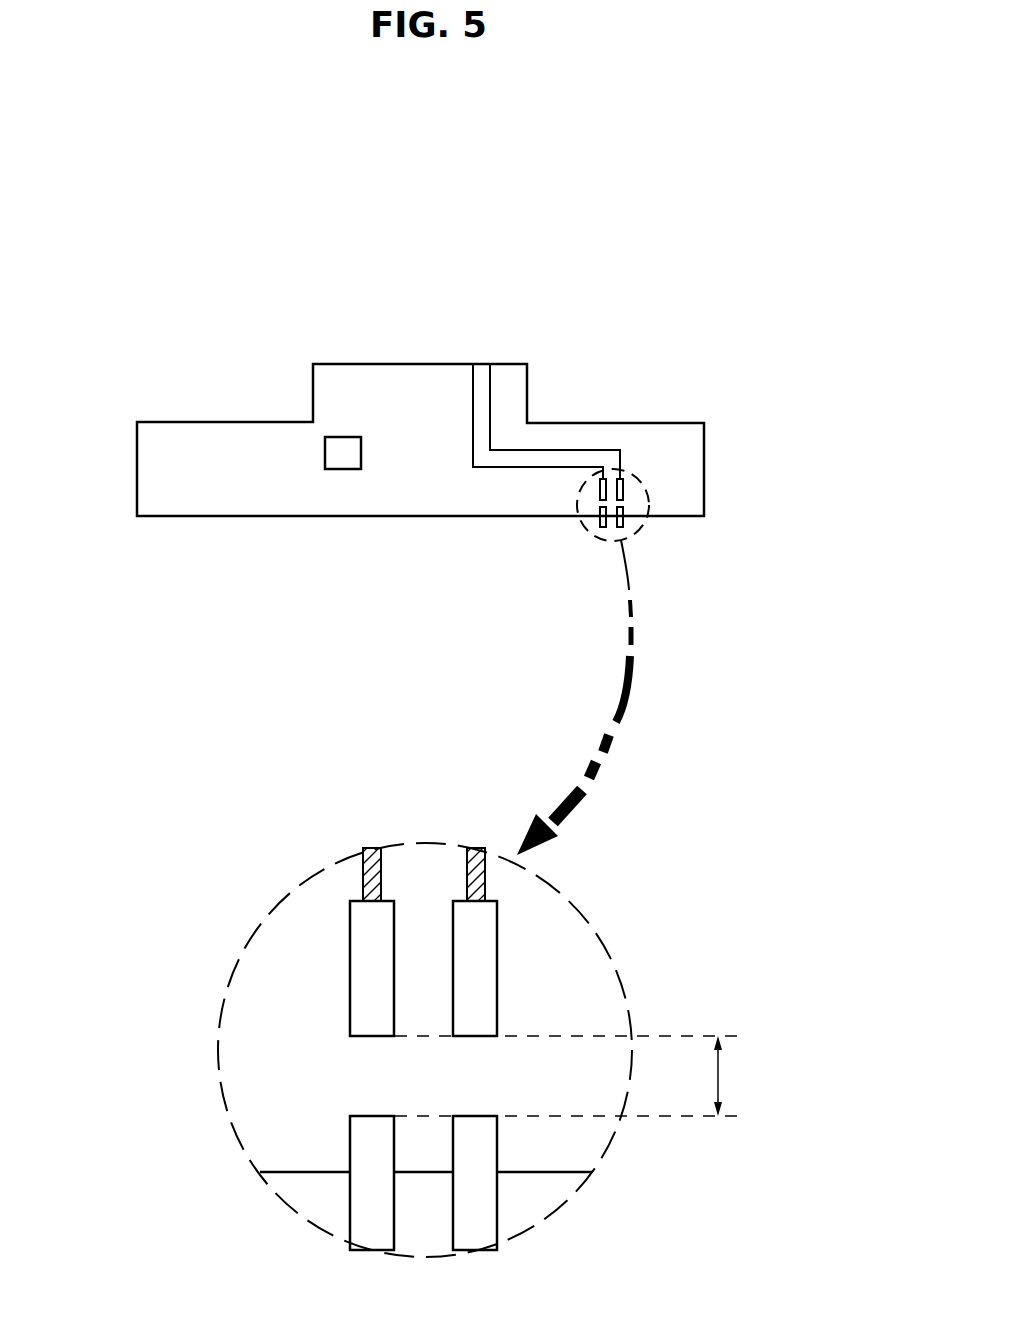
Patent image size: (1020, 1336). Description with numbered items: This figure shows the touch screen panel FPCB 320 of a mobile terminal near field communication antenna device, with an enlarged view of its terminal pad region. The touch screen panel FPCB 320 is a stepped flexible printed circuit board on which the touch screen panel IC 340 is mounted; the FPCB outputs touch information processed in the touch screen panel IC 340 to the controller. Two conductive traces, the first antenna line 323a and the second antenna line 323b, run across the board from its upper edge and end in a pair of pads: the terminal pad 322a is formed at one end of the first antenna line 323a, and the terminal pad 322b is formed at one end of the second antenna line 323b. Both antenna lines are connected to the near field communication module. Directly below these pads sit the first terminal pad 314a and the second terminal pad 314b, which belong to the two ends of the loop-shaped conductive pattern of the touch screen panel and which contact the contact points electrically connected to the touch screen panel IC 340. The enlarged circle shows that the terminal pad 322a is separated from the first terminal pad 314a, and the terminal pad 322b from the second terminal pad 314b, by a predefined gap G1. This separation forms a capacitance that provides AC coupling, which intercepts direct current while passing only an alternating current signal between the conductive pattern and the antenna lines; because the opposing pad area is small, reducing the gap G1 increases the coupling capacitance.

The touch screen panel FPCB 320 is at (704, 443).
The touch screen panel IC 340 is at (325, 453).
The first antenna line 323a is at (441, 364).
The second antenna line 323b is at (525, 364).
The terminal pad of the first antenna line 322a is at (600, 488).
The terminal pad of the second antenna line 322b is at (627, 485).
The first terminal pad 314a is at (598, 520).
The second terminal pad 314b is at (643, 515).
The gap G1 is at (733, 1076).